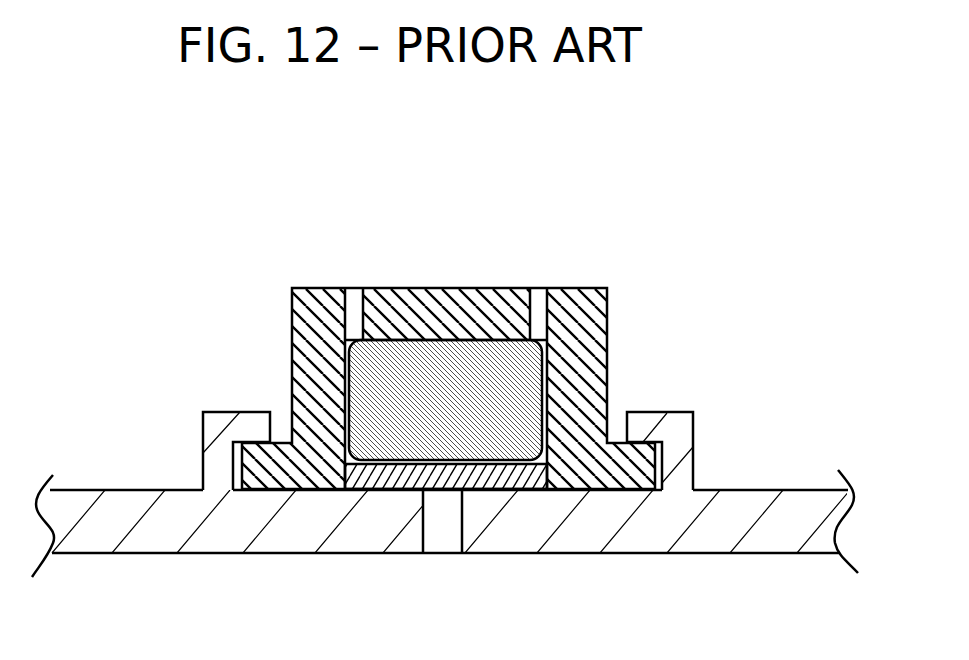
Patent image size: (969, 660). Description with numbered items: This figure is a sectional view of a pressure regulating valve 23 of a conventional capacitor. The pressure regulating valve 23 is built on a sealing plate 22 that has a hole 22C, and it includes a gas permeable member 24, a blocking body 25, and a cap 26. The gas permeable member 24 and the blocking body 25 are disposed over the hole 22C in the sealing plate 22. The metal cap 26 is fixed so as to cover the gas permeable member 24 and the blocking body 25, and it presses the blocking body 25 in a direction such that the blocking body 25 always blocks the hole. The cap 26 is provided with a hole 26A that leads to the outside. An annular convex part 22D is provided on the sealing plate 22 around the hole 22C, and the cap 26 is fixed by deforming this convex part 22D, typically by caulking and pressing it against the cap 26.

The sealing plate 22 is at (690, 543).
The hole 22C is at (445, 535).
The annular convex part 22D is at (675, 453).
The pressure regulating valve 23 is at (642, 250).
The gas permeable member 24 is at (366, 488).
The blocking body 25 is at (513, 375).
The cap 26 is at (302, 348).
The hole 26A is at (536, 305).